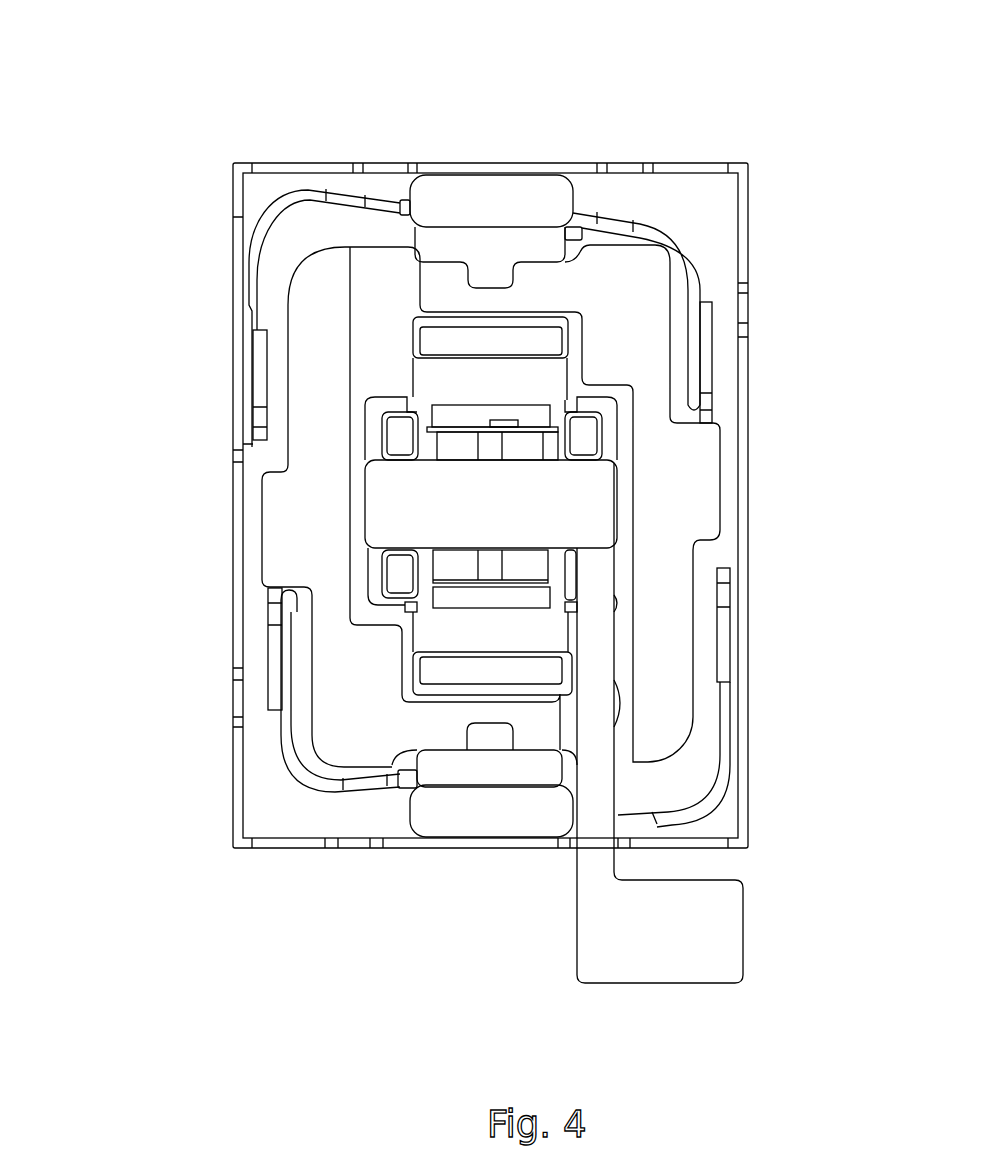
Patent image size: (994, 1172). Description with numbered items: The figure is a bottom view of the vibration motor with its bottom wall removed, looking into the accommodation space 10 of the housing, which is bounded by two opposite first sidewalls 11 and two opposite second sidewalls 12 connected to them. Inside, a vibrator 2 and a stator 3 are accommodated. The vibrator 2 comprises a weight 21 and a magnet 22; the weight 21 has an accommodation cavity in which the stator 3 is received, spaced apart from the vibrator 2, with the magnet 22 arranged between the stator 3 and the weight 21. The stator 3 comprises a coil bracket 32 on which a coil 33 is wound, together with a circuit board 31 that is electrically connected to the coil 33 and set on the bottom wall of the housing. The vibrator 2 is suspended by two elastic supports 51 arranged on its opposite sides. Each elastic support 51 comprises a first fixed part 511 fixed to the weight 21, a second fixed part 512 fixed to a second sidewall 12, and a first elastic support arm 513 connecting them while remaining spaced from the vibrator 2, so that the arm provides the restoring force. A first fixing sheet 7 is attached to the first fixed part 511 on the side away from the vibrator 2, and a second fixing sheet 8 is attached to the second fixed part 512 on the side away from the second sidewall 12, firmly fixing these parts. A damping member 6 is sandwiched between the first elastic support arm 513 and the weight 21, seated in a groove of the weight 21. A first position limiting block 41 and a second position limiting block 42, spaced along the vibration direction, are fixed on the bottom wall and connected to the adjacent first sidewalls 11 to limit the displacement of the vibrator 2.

The accommodation space 10 is at (292, 180).
The first sidewall 11 is at (348, 173).
The second sidewall 12 is at (236, 218).
The vibrator 2 is at (85, 315).
The weight 21 is at (357, 368).
The magnet 22 is at (482, 340).
The stator 3 is at (85, 452).
The circuit board 31 is at (635, 945).
The coil bracket 32 is at (490, 600).
The coil 33 is at (512, 447).
The first position limiting block 41 is at (432, 812).
The second position limiting block 42 is at (493, 185).
The elastic support 51 is at (678, 232).
The first fixed part 511 is at (285, 623).
The second fixed part 512 is at (722, 668).
The first elastic support arm 513 is at (735, 790).
The damping member 6 is at (515, 778).
The first fixing sheet 7 is at (275, 673).
The second fixing sheet 8 is at (722, 640).